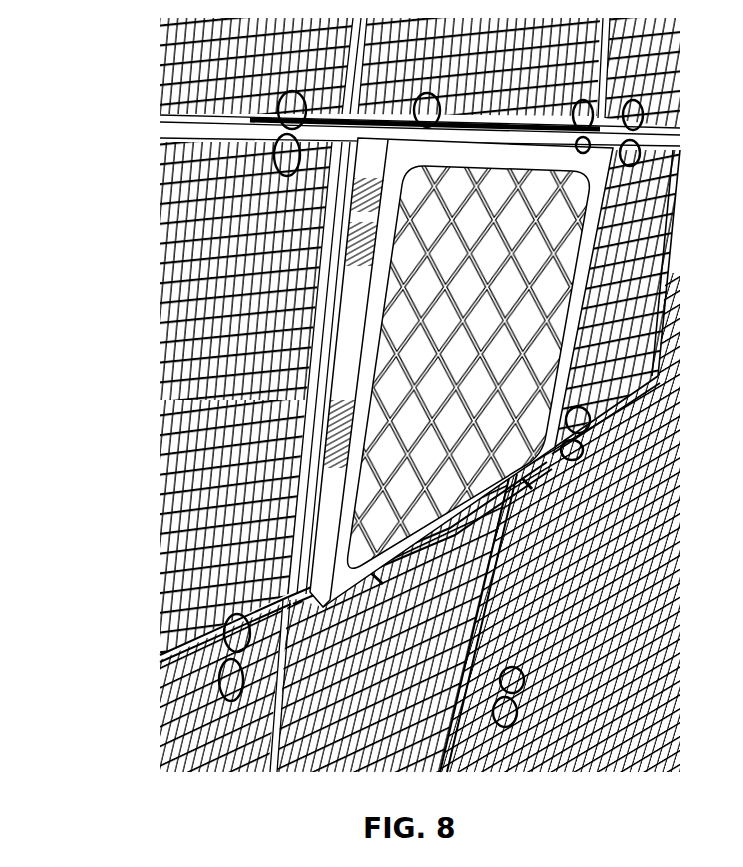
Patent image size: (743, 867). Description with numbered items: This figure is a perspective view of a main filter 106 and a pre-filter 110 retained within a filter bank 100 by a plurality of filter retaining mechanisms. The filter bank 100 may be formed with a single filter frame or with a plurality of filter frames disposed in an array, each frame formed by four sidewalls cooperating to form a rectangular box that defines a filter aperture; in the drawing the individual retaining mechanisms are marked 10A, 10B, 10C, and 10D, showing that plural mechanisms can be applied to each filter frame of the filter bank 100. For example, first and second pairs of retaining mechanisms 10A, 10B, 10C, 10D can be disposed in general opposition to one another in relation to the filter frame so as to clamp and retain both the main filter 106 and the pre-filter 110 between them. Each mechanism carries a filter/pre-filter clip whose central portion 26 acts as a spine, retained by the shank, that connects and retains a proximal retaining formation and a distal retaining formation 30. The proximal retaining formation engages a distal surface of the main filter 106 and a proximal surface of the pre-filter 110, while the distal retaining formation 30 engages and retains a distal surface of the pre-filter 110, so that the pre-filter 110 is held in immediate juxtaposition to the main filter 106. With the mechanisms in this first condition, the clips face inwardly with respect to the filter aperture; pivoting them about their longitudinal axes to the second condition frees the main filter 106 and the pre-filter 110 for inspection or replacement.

The panel 10A is at (480, 117).
The panel 10B is at (645, 100).
The panel 10C is at (383, 583).
The panel 10D is at (532, 489).
The central portion 26 is at (440, 143).
The distal retaining formation 30 is at (447, 166).
The filter bank 100 is at (190, 384).
The main filter 106 is at (350, 138).
The pre-filter 110 is at (307, 557).